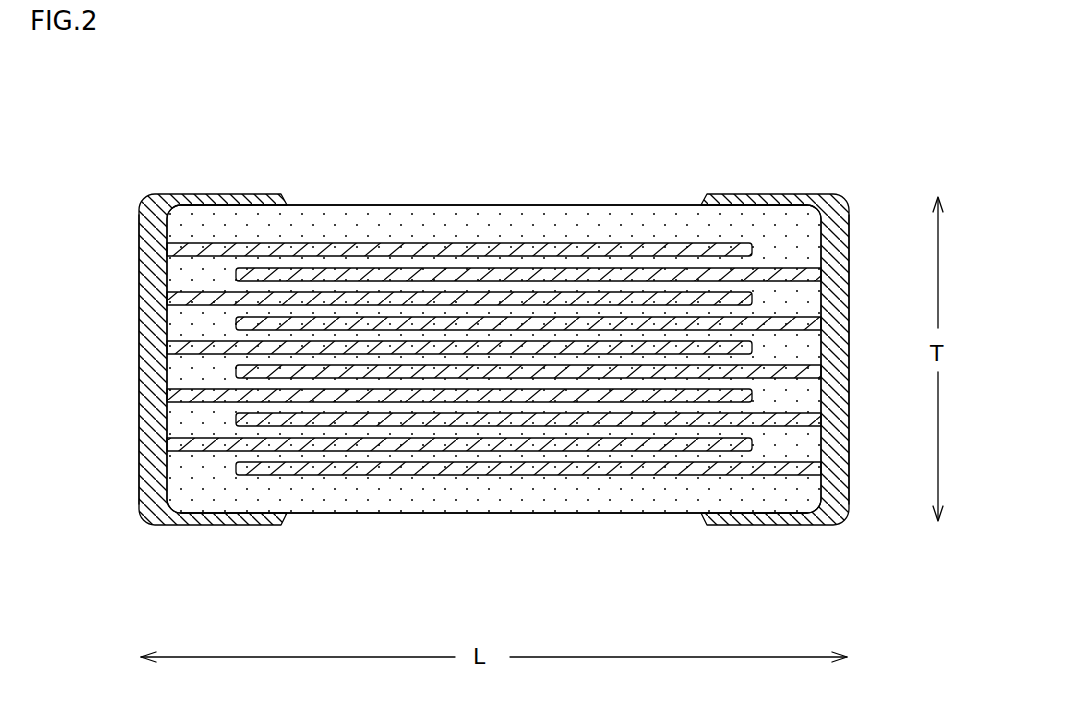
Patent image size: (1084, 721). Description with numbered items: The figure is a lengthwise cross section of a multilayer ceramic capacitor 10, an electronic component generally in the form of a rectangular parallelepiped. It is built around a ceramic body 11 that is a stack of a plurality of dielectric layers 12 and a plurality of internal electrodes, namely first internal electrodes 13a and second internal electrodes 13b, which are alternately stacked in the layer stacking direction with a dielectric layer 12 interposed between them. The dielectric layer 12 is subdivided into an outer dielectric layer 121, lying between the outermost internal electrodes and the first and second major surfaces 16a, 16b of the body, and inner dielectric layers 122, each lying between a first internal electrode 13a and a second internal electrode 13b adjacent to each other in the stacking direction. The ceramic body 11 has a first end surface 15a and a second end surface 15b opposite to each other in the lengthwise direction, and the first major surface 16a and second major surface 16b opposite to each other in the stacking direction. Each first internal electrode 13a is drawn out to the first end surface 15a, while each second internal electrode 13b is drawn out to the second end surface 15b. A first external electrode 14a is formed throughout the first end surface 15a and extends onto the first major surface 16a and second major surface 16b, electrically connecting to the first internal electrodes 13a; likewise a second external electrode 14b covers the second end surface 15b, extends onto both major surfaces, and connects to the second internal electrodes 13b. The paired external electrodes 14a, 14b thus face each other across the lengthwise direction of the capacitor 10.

The multilayer ceramic capacitor 10 is at (492, 339).
The ceramic body 11 is at (494, 343).
The dielectric layer 12 is at (494, 342).
The outer dielectric layer 121 is at (397, 206).
The inner dielectric layer 122 is at (543, 291).
The first internal electrode 13a is at (620, 296).
The second internal electrode 13b is at (605, 414).
The first external electrode 14a is at (139, 336).
The second external electrode 14b is at (849, 297).
The first end surface 15a is at (167, 359).
The second end surface 15b is at (818, 335).
The first major surface 16a is at (328, 205).
The second major surface 16b is at (350, 514).